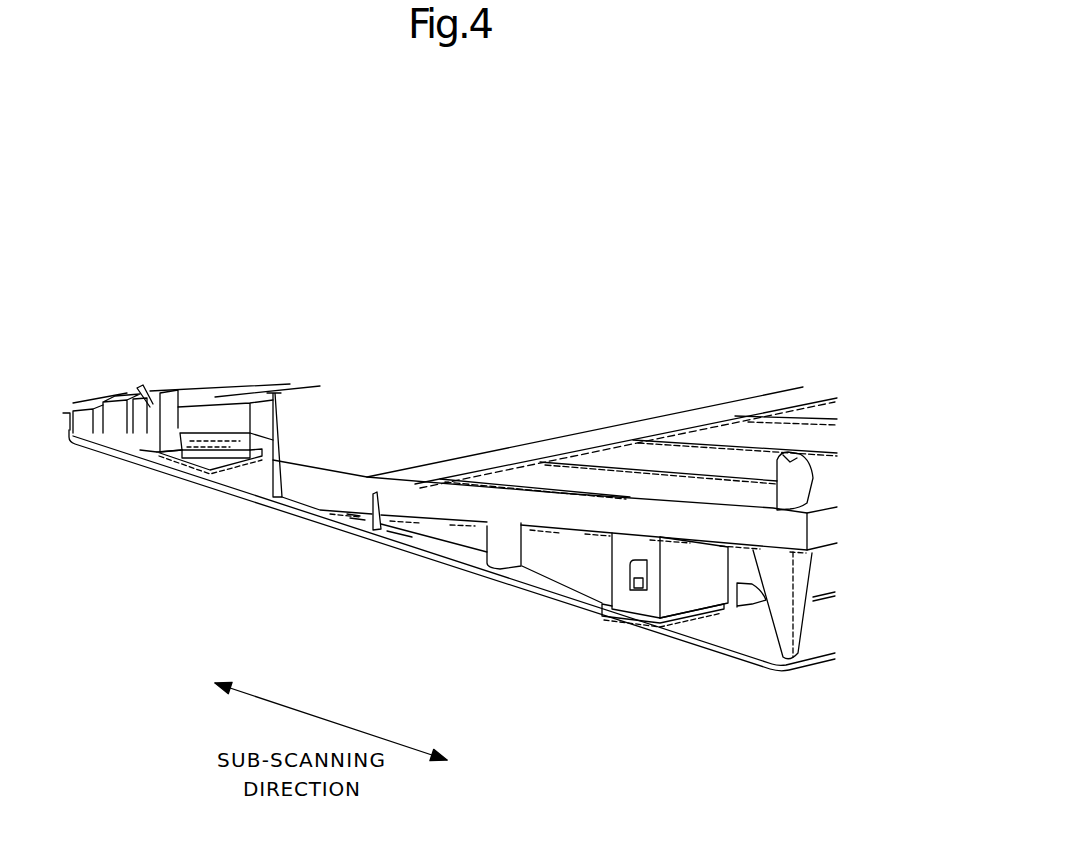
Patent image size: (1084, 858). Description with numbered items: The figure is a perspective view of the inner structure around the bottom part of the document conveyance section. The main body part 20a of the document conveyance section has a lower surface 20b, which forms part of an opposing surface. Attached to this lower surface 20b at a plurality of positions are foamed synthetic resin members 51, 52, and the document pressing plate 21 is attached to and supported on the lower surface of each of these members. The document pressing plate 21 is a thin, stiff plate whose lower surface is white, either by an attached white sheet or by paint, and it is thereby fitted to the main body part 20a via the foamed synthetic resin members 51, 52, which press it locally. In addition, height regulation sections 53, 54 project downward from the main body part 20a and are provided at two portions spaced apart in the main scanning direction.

The main body part 20a is at (430, 512).
The lower surface 20b is at (223, 467).
The document pressing plate 21 is at (310, 521).
The foamed synthetic resin member 51 is at (177, 460).
The foamed synthetic resin member 52 is at (607, 611).
The height regulation section 53 is at (88, 430).
The height regulation section 54 is at (783, 602).